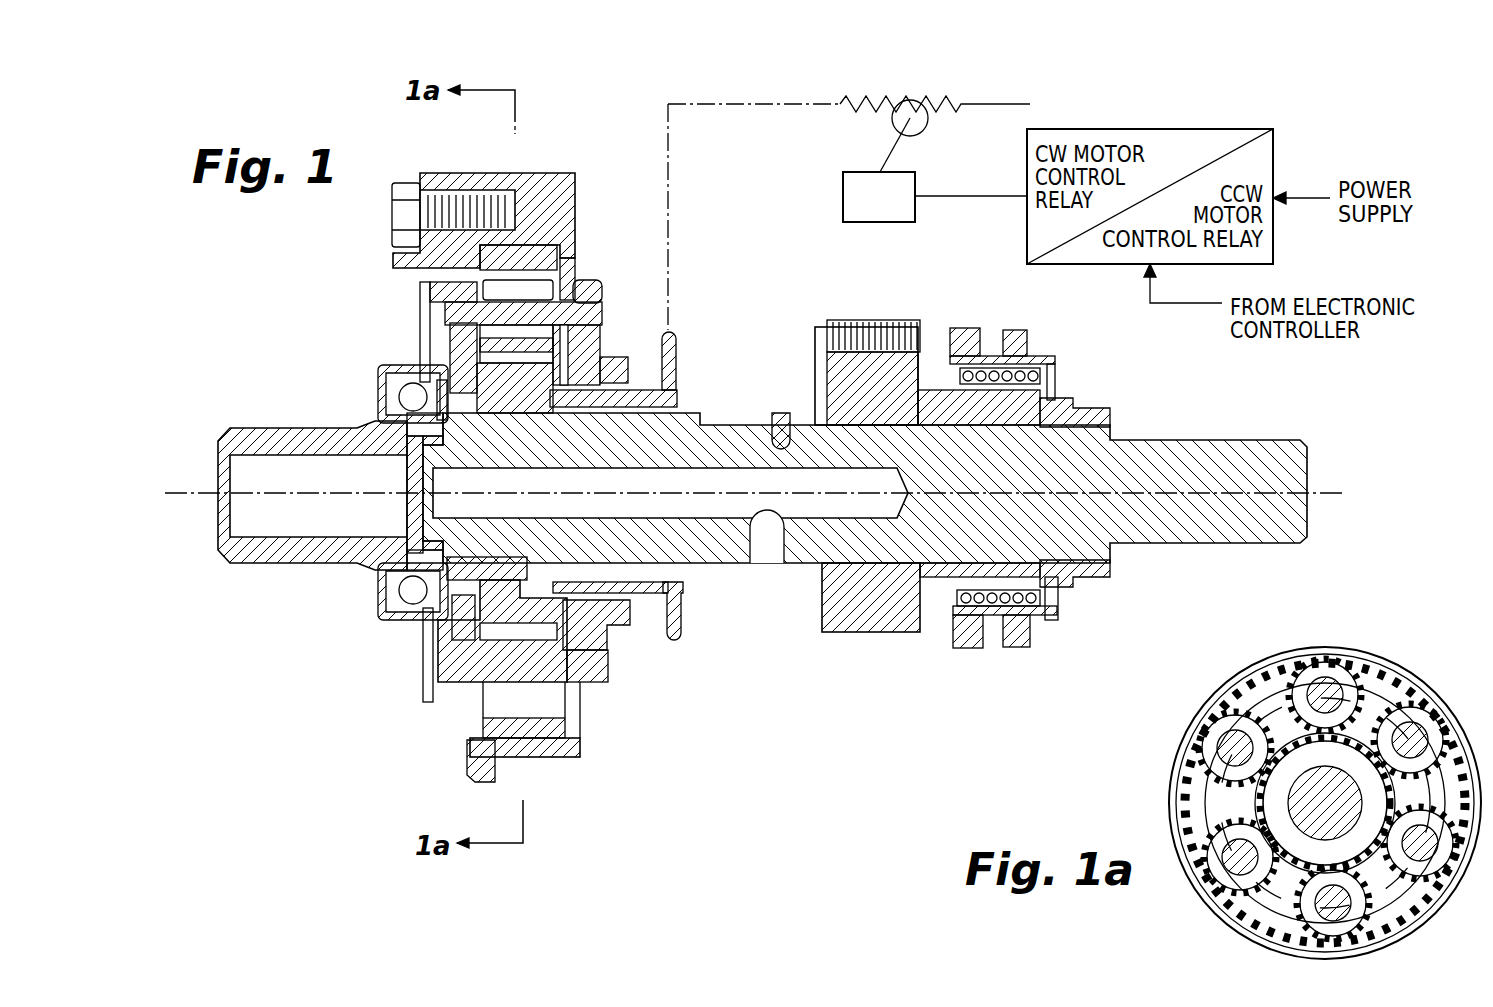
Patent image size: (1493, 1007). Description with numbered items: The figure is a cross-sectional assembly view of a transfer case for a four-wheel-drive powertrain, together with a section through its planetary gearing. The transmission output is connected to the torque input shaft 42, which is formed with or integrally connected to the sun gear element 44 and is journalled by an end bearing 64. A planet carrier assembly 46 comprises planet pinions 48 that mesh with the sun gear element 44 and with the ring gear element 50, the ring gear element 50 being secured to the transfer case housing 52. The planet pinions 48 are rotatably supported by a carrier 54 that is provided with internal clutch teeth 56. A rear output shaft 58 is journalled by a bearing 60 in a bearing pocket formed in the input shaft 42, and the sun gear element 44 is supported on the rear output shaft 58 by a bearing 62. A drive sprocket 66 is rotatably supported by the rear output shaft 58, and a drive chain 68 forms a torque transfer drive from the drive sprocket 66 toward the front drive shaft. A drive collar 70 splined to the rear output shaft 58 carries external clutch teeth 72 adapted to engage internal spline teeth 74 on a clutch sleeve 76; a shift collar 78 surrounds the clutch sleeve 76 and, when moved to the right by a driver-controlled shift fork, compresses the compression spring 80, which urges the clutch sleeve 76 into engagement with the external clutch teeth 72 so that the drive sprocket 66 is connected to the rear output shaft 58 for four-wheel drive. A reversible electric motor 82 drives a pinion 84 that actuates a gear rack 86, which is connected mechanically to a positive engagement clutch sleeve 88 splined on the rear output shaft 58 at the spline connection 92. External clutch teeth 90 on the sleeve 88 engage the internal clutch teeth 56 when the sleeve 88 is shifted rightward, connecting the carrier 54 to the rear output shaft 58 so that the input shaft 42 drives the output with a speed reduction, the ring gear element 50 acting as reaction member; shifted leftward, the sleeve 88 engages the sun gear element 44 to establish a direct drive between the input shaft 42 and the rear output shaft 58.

In FIG. 1, the torque input shaft 42 is at (290, 550).
In FIG. 1, the sun gear element 44 is at (598, 668).
In FIG. 1A, the sun gear element 44 is at (1290, 760).
In FIG. 1, the planet carrier assembly 46 is at (533, 338).
In FIG. 1, the planet pinions 48 is at (500, 307).
In FIG. 1A, the planet pinions 48 is at (1305, 688).
In FIG. 1, the ring gear element 50 is at (560, 718).
In FIG. 1A, the ring gear element 50 is at (1440, 690).
In FIG. 1, the transfer case housing 52 is at (467, 748).
In FIG. 1, the carrier 54 is at (610, 367).
In FIG. 1A, the carrier 54 is at (1380, 690).
In FIG. 1, the internal clutch teeth 56 is at (640, 615).
In FIG. 1, the rear output shaft 58 is at (944, 535).
In FIG. 1, the bearing 60 is at (428, 570).
In FIG. 1, the bearing 62 is at (598, 455).
In FIG. 1, the end bearing 64 is at (398, 585).
In FIG. 1, the drive sprocket 66 is at (895, 380).
In FIG. 1, the drive chain 68 is at (860, 332).
In FIG. 1, the drive collar 70 is at (1085, 430).
In FIG. 1, the external clutch teeth 72 is at (1075, 405).
In FIG. 1, the internal spline teeth 74 is at (1033, 580).
In FIG. 1, the clutch sleeve 76 is at (990, 390).
In FIG. 1, the shift collar 78 is at (1020, 640).
In FIG. 1, the compression spring 80 is at (985, 600).
In FIG. 1, the reversible electric motor 82 is at (843, 183).
In FIG. 1, the pinion 84 is at (928, 125).
In FIG. 1, the gear rack 86 is at (840, 104).
In FIG. 1, the positive engagement clutch sleeve 88 is at (680, 390).
In FIG. 1, the external clutch teeth 90 is at (565, 383).
In FIG. 1, the spline connection 92 is at (676, 586).